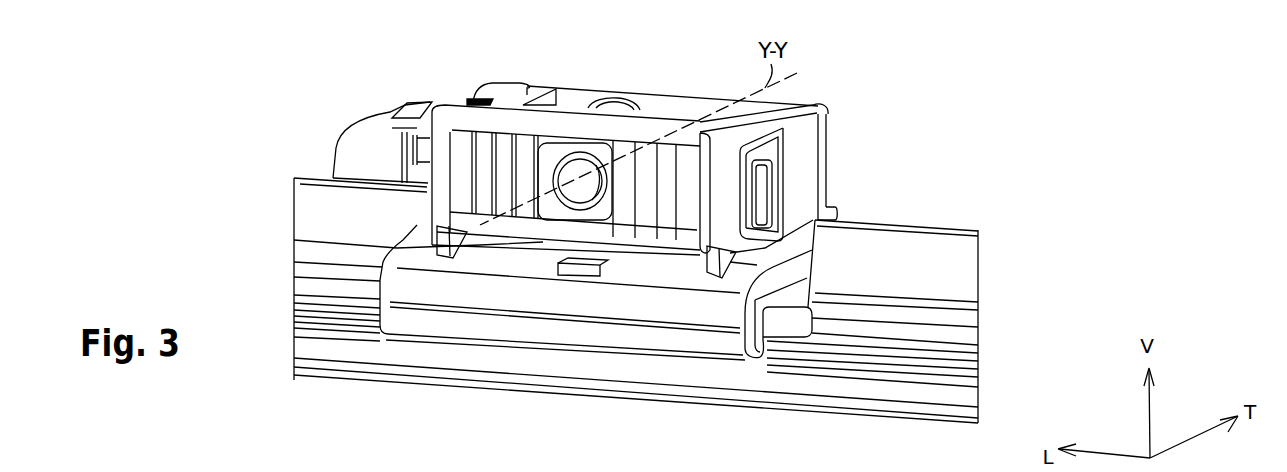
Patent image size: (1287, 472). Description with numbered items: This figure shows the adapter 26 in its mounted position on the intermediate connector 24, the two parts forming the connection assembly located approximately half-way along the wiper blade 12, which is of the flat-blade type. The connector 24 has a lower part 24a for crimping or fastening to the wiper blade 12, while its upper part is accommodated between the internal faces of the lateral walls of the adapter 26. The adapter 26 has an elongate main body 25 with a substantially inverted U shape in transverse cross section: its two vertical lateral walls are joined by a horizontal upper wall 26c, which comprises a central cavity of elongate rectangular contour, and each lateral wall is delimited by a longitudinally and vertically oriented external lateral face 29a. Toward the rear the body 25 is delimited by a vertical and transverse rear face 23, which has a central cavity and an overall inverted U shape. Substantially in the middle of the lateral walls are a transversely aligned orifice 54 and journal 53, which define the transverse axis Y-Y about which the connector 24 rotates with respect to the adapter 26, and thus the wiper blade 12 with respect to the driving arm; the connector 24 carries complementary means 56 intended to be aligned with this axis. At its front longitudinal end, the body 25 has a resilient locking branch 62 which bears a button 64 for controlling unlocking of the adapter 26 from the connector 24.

The wiper blade 12 is at (993, 302).
The rear face 23 is at (800, 143).
The intermediate connector 24 is at (452, 298).
The lower part 24a is at (810, 318).
The elongate main body 25 is at (708, 107).
The adapter 26 is at (905, 166).
The horizontal upper wall 26c is at (507, 100).
The external lateral face 29a is at (300, 238).
The journal 53 is at (612, 100).
The orifice 54 is at (547, 157).
The complementary means 56 is at (582, 195).
The resilient locking branch 62 is at (438, 133).
The button 64 is at (331, 157).